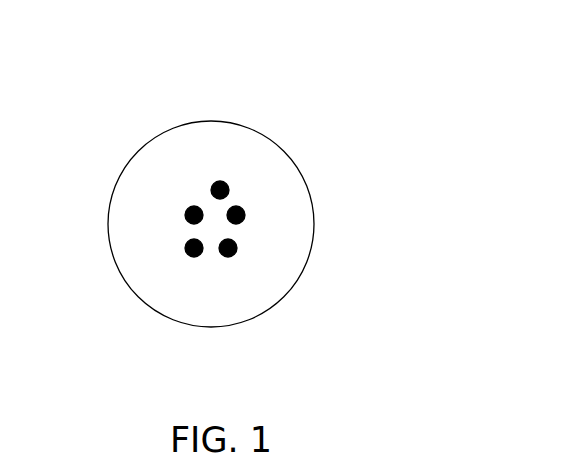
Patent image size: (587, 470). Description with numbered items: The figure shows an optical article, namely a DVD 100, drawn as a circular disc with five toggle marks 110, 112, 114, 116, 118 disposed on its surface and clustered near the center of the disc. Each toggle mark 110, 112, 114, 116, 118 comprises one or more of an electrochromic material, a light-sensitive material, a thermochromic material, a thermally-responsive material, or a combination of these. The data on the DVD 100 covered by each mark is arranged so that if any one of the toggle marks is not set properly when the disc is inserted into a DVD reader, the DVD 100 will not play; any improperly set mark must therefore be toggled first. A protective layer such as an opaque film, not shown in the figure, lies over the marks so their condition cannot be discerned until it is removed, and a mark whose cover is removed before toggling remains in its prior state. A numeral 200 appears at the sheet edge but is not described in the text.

The DVD 100 is at (435, 77).
The toggle mark 110 is at (194, 215).
The toggle mark 112 is at (220, 190).
The toggle mark 114 is at (236, 215).
The toggle mark 116 is at (228, 248).
The toggle mark 118 is at (194, 248).
The fiber arrangement 200 is at (508, 469).